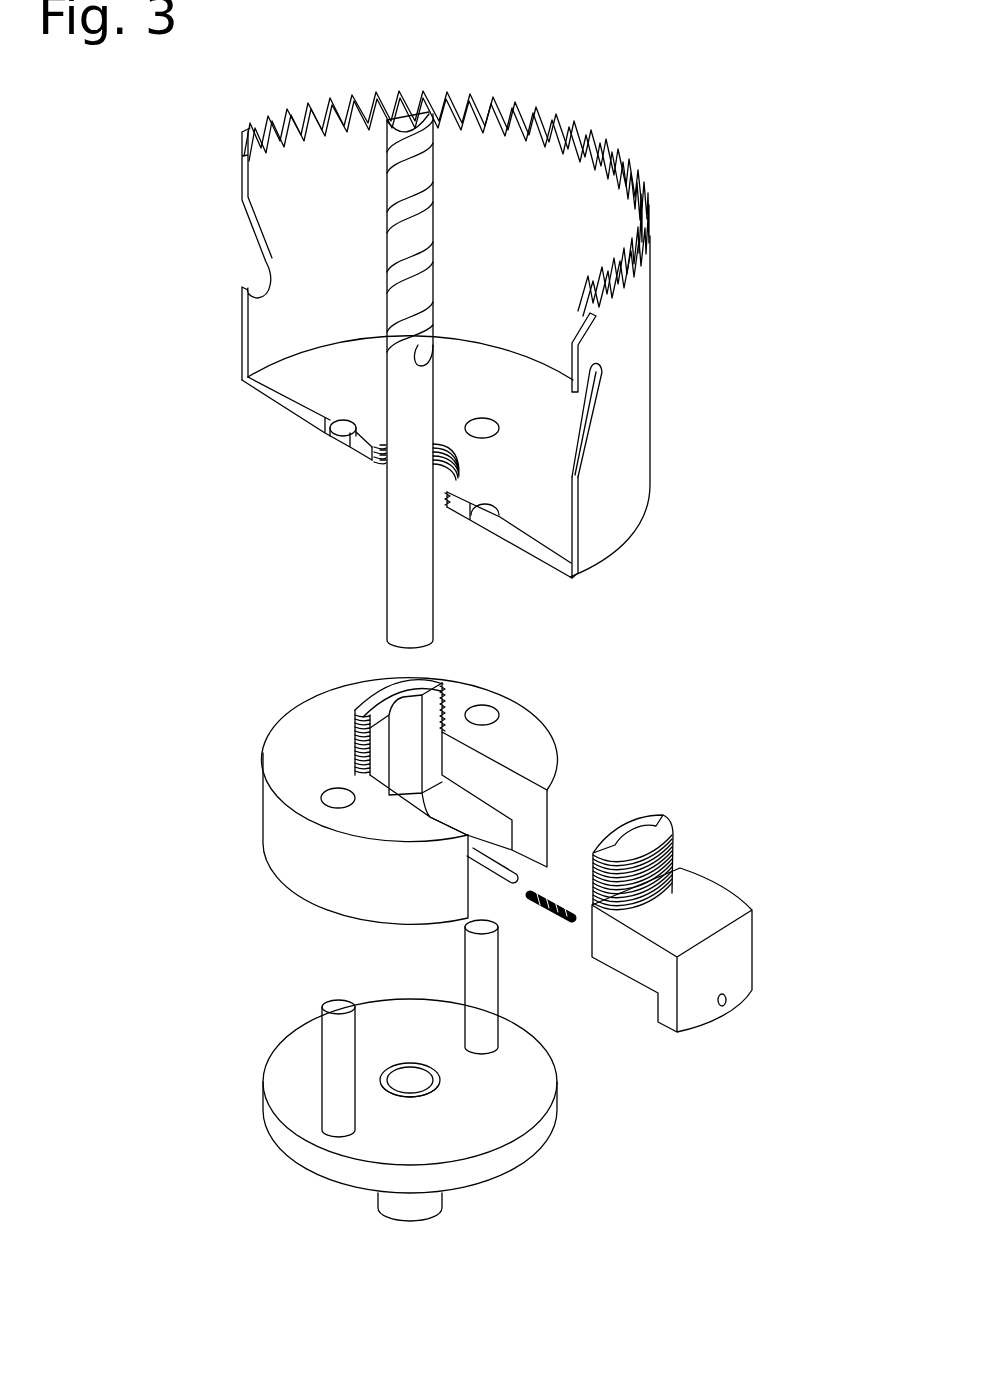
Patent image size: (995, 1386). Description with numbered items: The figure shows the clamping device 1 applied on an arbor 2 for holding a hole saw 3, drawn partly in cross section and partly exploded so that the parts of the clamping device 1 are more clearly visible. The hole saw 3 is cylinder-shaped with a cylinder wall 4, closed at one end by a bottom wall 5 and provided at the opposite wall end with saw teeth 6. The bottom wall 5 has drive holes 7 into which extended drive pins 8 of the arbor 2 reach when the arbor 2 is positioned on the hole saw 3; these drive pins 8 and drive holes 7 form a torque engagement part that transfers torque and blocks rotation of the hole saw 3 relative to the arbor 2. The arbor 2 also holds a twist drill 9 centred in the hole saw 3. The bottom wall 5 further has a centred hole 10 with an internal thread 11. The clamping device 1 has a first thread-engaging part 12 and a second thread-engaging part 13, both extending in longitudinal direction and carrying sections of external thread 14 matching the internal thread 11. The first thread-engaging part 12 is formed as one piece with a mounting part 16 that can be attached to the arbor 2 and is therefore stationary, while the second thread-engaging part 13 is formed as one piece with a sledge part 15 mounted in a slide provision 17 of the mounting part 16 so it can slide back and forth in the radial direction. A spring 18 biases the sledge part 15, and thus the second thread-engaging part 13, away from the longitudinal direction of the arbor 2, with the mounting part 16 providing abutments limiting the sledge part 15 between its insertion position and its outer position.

The clamping device 1 is at (434, 777).
The arbor 2 is at (400, 1207).
The hole saw 3 is at (648, 312).
The cylinder wall 4 is at (612, 443).
The bottom wall 5 is at (548, 572).
The saw teeth 6 is at (595, 128).
The drive holes 7 is at (345, 432).
The drive pins 8 is at (330, 1060).
The twist drill 9 is at (417, 552).
The centred hole 10 is at (436, 505).
The internal thread 11 is at (378, 470).
The first thread-engaging part 12 is at (378, 702).
The second thread-engaging part 13 is at (620, 850).
The external thread 14 is at (355, 747).
The sledge part 15 is at (695, 920).
The mounting part 16 is at (330, 855).
The slide provision 17 is at (480, 791).
The spring 18 is at (548, 915).